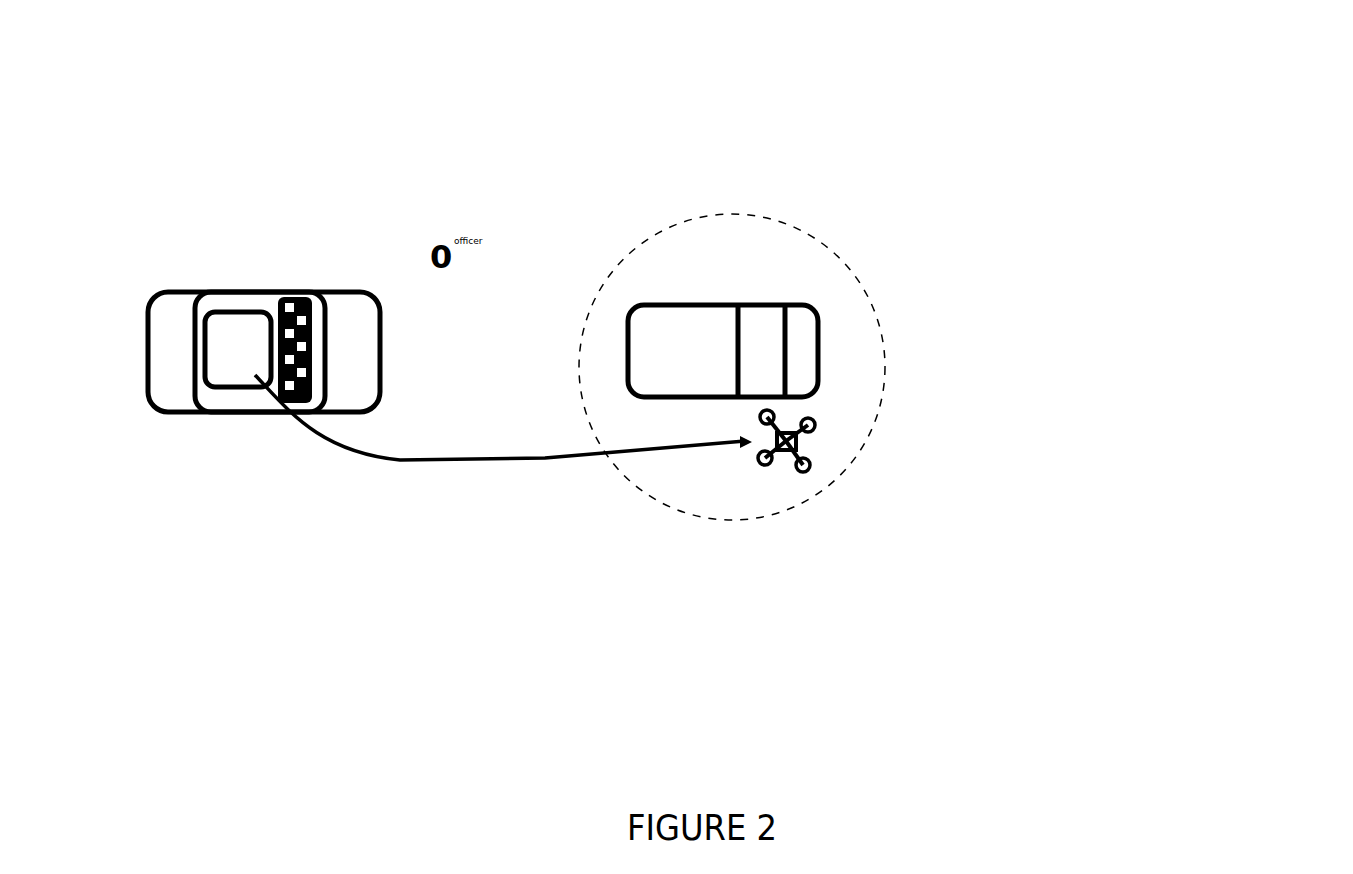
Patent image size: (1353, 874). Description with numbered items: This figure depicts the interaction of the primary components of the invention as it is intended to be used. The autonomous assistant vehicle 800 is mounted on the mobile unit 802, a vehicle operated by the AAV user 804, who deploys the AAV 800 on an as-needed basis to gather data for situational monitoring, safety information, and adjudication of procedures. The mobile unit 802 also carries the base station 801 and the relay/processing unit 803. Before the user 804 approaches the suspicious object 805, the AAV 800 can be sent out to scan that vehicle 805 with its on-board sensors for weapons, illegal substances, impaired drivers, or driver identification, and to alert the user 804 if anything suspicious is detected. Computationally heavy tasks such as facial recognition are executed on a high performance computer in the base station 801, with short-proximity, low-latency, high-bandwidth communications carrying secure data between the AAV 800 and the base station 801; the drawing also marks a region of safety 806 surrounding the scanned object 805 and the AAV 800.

The autonomous assistant vehicle (AAV) 800 is at (804, 490).
The base station 801 is at (357, 458).
The mobile unit 802 is at (219, 224).
The relay/processing unit 803 is at (564, 256).
The AAV user 804 is at (579, 256).
The suspicious object 805 is at (832, 352).
The Region of Safety 806 is at (855, 462).